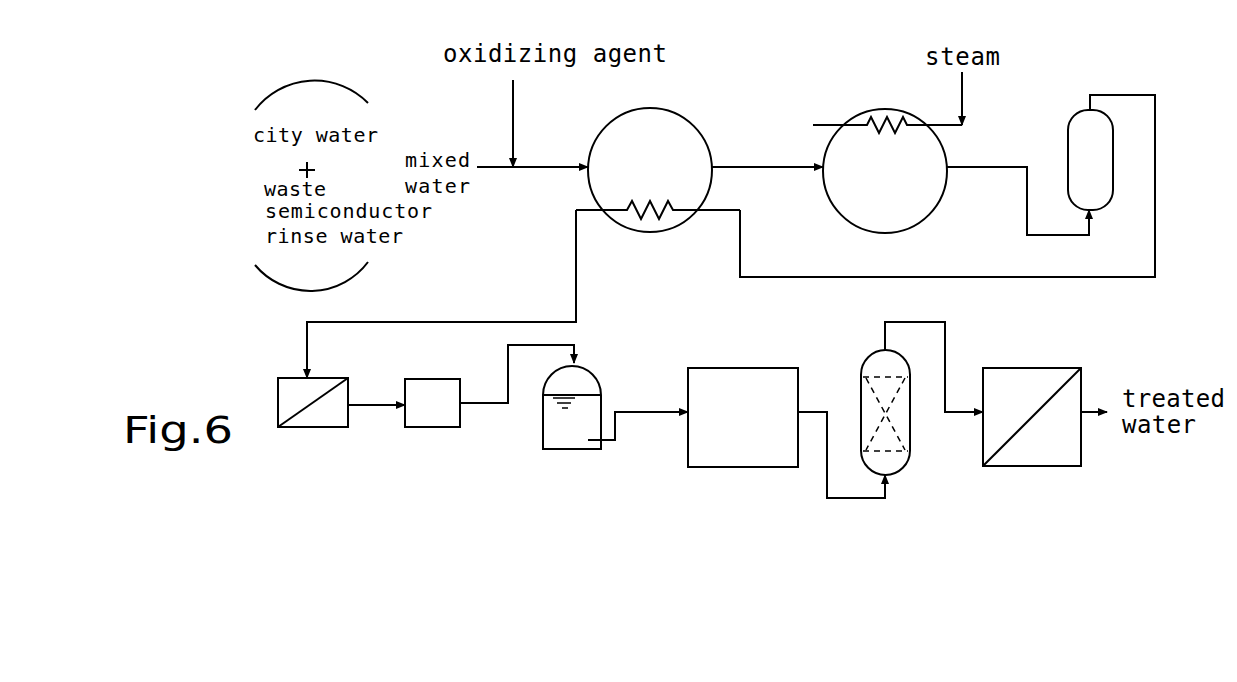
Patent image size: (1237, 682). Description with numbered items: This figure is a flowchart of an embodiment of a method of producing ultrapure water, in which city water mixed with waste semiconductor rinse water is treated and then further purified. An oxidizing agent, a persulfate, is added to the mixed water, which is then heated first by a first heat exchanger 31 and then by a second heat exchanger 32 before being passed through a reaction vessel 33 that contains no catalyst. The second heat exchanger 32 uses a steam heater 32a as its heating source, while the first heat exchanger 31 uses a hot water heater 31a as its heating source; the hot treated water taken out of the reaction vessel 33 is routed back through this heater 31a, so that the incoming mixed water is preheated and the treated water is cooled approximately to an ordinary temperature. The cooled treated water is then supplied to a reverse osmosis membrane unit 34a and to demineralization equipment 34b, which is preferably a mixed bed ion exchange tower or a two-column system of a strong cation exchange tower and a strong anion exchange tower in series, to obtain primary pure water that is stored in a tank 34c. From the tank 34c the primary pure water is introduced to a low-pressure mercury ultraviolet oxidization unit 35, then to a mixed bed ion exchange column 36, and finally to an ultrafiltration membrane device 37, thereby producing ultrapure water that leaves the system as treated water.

The first heat exchanger 31 is at (678, 113).
The hot water heater 31a is at (648, 215).
The second heat exchanger 32 is at (858, 115).
The steam heater 32a is at (888, 120).
The reaction vessel 33 is at (1078, 112).
The reverse osmosis membrane unit 34a is at (302, 428).
The demineralization equipment 34b is at (420, 428).
The tank 34c is at (573, 450).
The low-pressure mercury ultraviolet oxidization unit 35 is at (748, 368).
The mixed bed ion exchange column 36 is at (865, 366).
The ultrafiltration membrane device 37 is at (1022, 368).